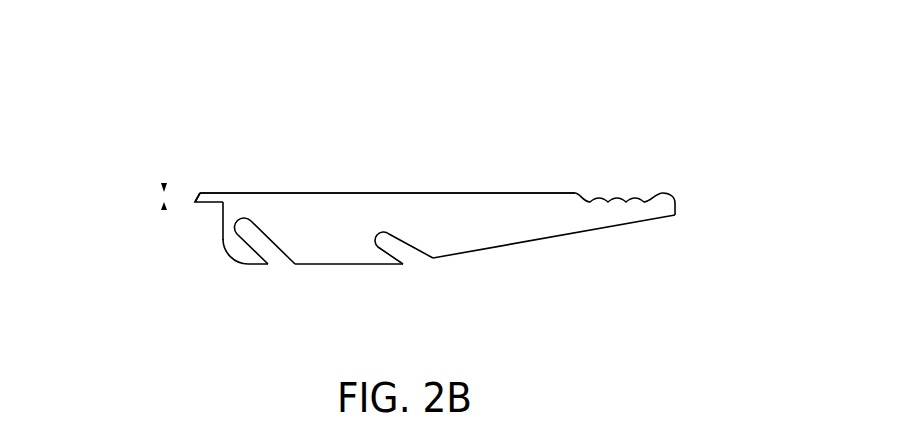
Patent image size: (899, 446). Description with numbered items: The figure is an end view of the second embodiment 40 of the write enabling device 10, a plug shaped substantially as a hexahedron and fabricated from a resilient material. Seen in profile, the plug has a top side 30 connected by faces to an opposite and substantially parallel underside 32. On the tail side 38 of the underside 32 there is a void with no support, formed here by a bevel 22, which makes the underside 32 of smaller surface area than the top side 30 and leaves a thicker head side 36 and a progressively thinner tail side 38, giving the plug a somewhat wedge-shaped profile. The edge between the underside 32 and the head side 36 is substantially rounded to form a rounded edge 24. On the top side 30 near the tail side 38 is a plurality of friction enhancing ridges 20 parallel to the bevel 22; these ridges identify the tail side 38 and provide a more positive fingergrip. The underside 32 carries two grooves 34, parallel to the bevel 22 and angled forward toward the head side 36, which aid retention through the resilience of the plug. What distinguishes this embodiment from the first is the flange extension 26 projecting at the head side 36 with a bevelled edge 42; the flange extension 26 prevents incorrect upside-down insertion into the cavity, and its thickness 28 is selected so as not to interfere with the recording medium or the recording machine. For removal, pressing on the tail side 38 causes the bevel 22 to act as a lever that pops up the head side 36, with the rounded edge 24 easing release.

The write enabling device 10 is at (289, 41).
The friction enhancing ridges 20 is at (593, 160).
The bevel 22 is at (533, 290).
The rounded edge 24 is at (222, 252).
The flange extension 26 is at (191, 162).
The thickness 28 is at (156, 200).
The top side 30 is at (374, 138).
The underside 32 is at (347, 316).
The groove 34 is at (350, 278).
The head side 36 is at (222, 228).
The tail side 38 is at (677, 210).
The second embodiment 40 is at (495, 68).
The bevelled edge 42 is at (194, 211).